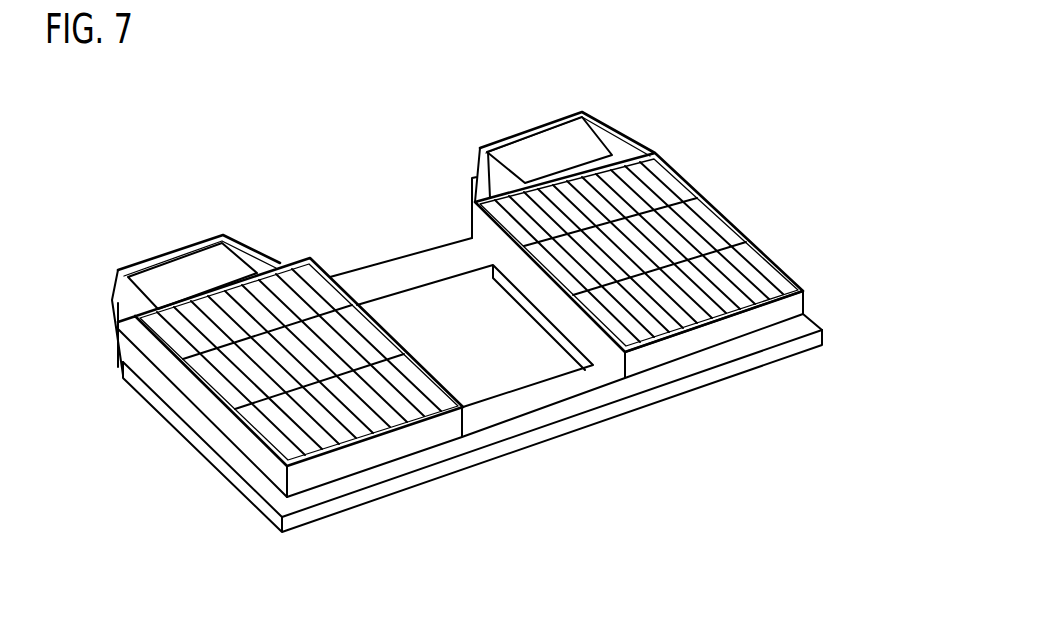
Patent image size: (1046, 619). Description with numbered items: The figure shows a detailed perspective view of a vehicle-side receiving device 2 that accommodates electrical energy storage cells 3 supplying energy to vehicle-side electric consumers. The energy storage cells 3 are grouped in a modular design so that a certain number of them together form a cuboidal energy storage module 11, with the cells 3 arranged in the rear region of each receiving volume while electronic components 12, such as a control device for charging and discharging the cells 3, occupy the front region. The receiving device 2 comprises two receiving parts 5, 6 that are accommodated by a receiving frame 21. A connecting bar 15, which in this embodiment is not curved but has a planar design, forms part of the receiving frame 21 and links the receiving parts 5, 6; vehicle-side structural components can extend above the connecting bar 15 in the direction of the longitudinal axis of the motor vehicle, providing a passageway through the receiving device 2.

The receiving device 2 is at (693, 152).
The energy storage cells 3 is at (747, 252).
The receiving part 5 is at (210, 480).
The receiving part 6 is at (811, 231).
The energy storage module 11 is at (662, 165).
The electronic components 12 is at (190, 268).
The connecting bar 15 is at (428, 272).
The receiving frame 21 is at (162, 403).